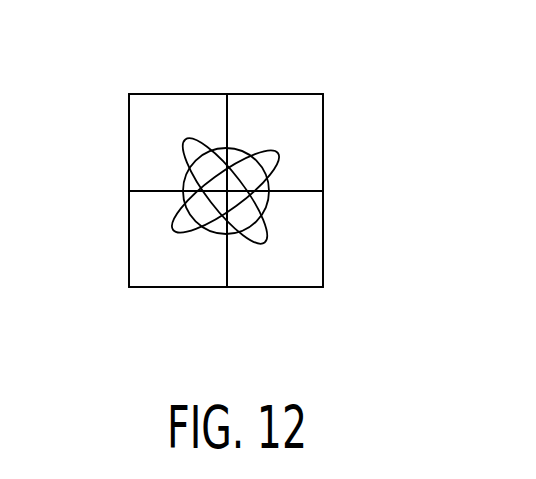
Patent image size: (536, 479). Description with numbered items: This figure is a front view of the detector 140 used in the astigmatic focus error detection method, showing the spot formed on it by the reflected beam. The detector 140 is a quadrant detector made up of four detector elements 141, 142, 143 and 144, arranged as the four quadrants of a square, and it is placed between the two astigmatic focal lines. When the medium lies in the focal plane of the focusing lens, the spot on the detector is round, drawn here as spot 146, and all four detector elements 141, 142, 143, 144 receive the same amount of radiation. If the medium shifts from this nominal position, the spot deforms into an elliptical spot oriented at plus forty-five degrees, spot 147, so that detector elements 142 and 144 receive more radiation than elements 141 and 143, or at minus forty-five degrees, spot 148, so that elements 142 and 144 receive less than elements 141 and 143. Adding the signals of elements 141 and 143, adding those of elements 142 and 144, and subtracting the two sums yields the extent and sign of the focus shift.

The detector 140 is at (393, 36).
The detector element 141 is at (163, 103).
The detector element 142 is at (278, 103).
The detector element 143 is at (279, 278).
The detector element 144 is at (166, 278).
The circular beam spot 146 is at (182, 180).
The elliptical spot 147 is at (272, 159).
The elliptical spot 148 is at (265, 233).